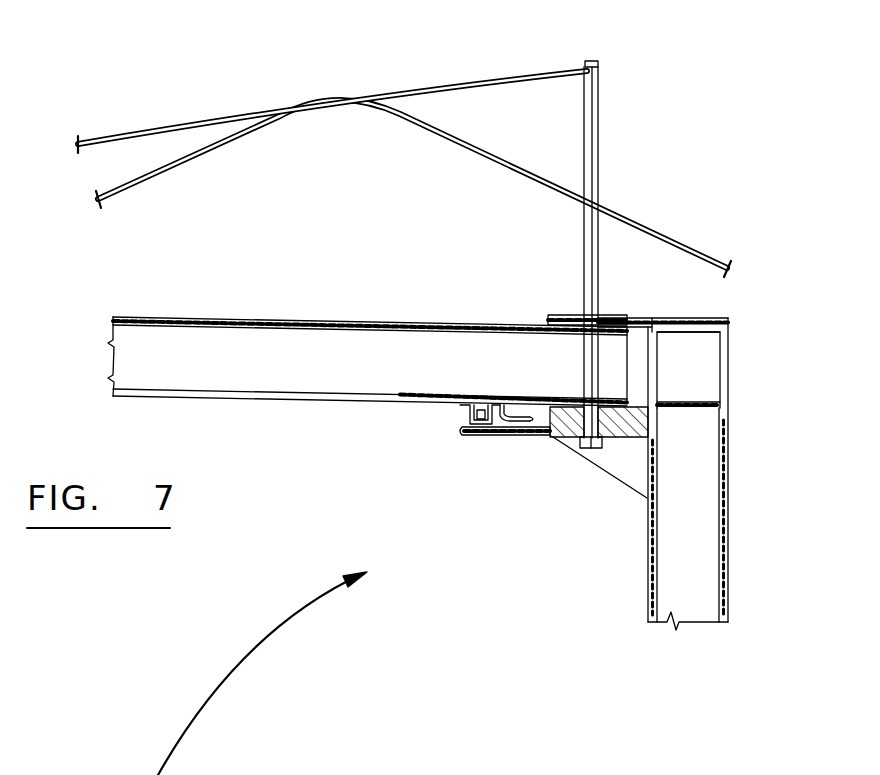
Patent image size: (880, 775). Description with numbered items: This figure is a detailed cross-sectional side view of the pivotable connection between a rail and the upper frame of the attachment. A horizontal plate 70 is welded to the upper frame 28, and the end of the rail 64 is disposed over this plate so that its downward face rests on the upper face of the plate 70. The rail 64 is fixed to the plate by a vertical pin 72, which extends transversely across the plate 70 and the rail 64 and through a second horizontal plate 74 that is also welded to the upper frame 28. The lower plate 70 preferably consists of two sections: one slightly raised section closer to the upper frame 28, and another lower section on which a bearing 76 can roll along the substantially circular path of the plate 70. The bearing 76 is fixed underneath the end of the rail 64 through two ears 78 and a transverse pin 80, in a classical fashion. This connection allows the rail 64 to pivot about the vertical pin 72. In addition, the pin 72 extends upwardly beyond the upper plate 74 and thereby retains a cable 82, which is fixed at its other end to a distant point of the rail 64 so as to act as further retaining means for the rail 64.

The upper frame 28 is at (694, 355).
The rail 64 is at (317, 376).
The horizontal plate 70 is at (521, 437).
The vertical pin 72 is at (598, 140).
The second horizontal plate 74 is at (563, 300).
The bearing 76 is at (470, 432).
The ears 78 is at (463, 410).
The transverse pin 80 is at (512, 417).
The cable 82 is at (446, 88).